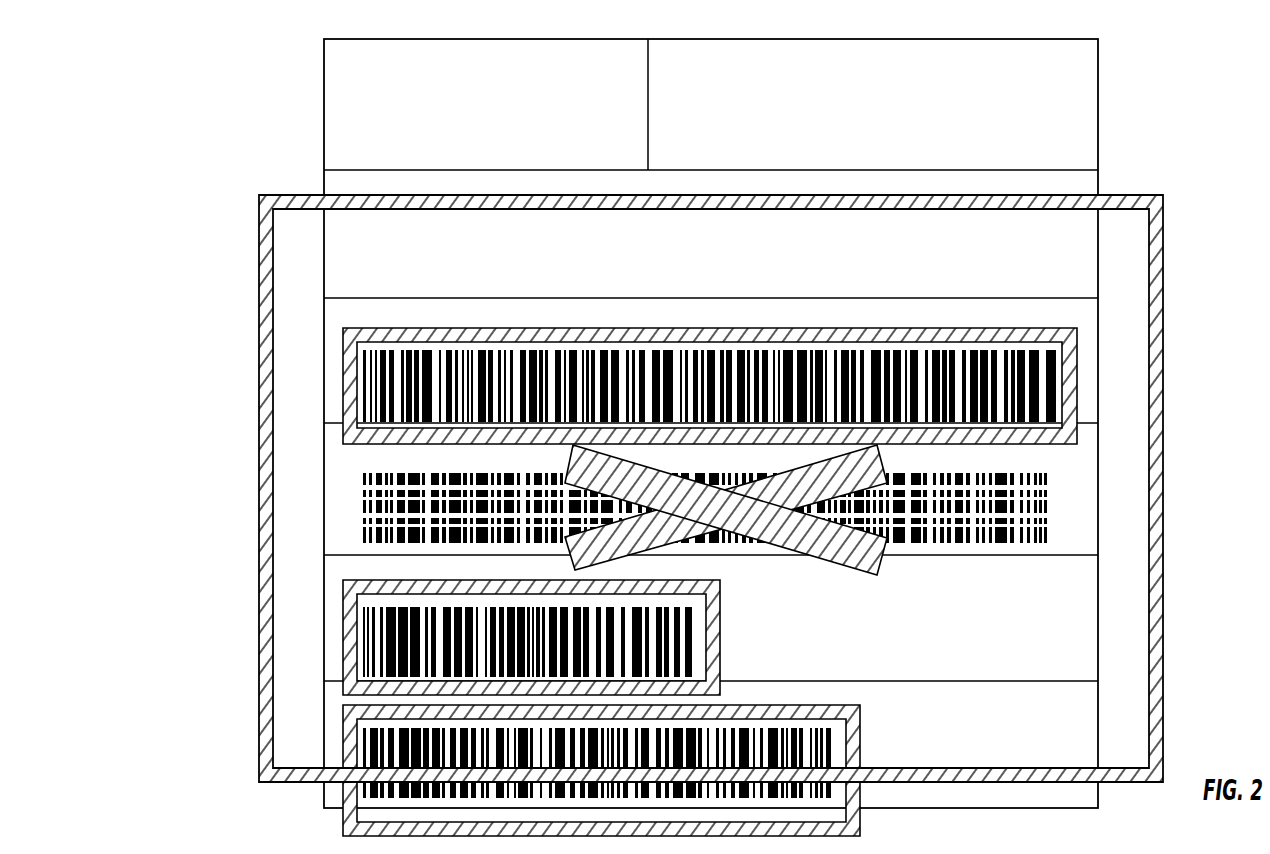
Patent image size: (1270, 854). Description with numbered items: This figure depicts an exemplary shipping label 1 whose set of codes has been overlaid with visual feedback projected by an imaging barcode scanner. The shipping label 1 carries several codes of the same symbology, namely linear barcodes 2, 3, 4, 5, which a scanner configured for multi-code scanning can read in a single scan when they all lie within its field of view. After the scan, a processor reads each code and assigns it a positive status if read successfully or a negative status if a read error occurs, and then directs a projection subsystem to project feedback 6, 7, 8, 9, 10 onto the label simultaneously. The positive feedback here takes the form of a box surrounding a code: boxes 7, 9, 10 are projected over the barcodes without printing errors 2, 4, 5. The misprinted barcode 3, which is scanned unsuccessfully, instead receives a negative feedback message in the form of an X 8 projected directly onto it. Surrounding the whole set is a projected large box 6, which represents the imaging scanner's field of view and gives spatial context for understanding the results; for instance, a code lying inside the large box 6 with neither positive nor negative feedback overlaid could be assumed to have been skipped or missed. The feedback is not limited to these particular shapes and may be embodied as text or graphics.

The shipping label 1 is at (198, 148).
The linear barcode 2 is at (363, 385).
The misprinted barcode 3 is at (363, 505).
The linear barcode 4 is at (363, 632).
The linear barcode 5 is at (363, 757).
The large box 6 is at (1166, 205).
The box 7 is at (1080, 380).
The X 8 is at (886, 565).
The box 9 is at (722, 632).
The box 10 is at (862, 740).